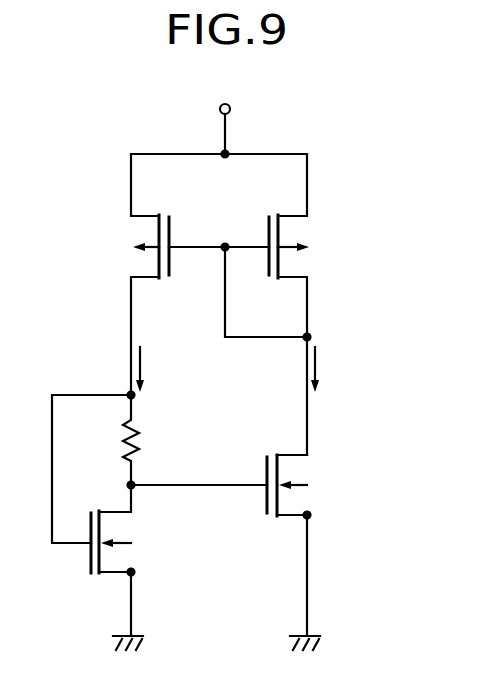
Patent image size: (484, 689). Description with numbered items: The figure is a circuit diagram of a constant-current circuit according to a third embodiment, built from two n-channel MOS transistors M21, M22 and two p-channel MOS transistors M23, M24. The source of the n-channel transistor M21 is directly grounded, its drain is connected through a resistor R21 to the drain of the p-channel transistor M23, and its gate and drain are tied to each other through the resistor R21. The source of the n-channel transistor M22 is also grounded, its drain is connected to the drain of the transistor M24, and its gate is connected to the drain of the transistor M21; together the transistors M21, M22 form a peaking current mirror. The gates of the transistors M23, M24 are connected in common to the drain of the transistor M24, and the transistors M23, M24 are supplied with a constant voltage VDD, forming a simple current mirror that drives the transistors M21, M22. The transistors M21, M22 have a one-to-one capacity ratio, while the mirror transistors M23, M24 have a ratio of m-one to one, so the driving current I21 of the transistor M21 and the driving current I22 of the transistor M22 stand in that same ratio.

The constant voltage VDD is at (223, 116).
The p-channel MOS transistor M23 is at (154, 274).
The p-channel MOS transistor M24 is at (292, 304).
The driving current I21 is at (154, 369).
The driving current I22 is at (329, 369).
The resistor R21 is at (147, 440).
The n-channel MOS transistor M21 is at (134, 567).
The n-channel MOS transistor M22 is at (313, 552).